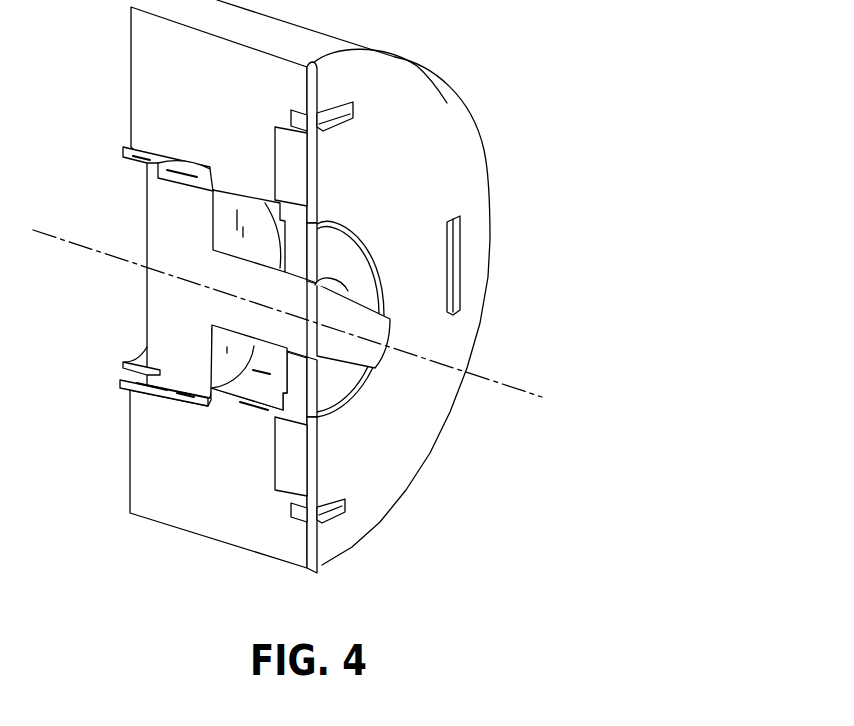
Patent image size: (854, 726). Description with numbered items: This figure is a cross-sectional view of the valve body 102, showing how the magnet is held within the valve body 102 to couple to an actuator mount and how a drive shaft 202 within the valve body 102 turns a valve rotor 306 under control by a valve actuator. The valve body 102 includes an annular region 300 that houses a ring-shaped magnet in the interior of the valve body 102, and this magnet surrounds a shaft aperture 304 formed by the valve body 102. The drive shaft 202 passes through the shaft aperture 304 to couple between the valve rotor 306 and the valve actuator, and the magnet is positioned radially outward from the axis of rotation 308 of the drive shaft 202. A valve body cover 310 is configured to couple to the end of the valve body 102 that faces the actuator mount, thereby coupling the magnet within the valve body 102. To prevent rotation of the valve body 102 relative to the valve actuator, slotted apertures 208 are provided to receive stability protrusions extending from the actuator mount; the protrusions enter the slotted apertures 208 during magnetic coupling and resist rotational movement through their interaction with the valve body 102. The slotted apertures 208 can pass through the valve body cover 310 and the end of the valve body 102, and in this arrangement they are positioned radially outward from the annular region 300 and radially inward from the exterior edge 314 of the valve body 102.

The valve body 102 is at (614, 70).
The drive shaft 202 is at (381, 328).
The slotted apertures 208 is at (353, 120).
The annular region 300 is at (323, 447).
The shaft aperture 304 is at (336, 382).
The valve rotor 306 is at (129, 201).
The axis of rotation 308 is at (513, 388).
The valve body cover 310 is at (407, 95).
The exterior edge 314 is at (217, 547).